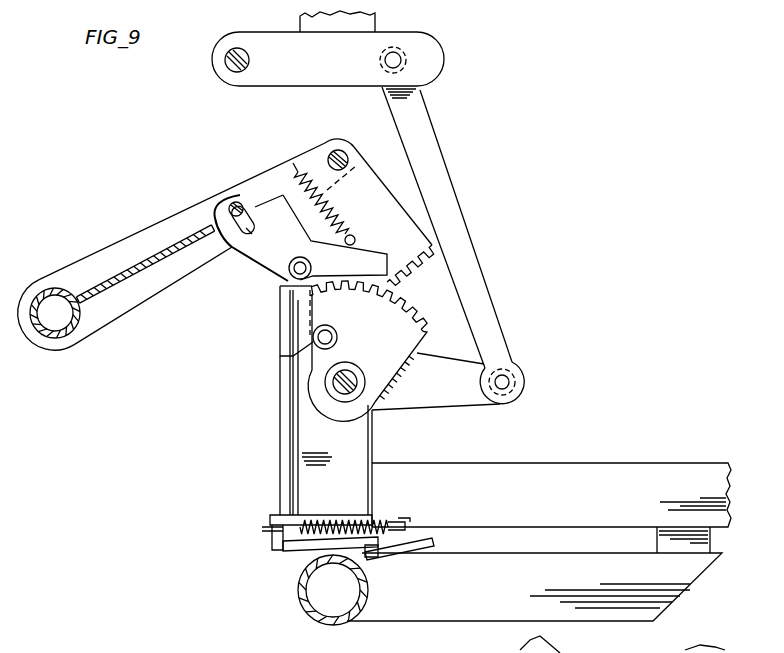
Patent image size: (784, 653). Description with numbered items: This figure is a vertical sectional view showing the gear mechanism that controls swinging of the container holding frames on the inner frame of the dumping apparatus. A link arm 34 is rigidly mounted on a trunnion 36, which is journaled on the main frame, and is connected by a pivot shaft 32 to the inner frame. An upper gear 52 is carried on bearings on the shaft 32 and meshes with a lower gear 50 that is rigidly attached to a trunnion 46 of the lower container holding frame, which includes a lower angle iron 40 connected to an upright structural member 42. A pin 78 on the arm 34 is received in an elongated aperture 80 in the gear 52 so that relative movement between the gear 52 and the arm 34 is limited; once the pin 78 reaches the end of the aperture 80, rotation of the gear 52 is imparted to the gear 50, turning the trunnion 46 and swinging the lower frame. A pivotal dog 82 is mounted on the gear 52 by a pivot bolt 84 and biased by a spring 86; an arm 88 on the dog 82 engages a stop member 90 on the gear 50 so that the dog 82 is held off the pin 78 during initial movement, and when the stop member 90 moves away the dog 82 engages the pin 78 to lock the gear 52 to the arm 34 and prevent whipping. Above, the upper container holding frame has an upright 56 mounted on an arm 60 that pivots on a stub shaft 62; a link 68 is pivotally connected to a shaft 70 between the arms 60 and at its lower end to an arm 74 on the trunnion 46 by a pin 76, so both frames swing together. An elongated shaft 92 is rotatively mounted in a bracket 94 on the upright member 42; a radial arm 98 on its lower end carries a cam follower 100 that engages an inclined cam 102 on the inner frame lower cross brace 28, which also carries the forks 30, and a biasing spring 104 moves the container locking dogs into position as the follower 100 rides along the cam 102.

The lower cross brace 28 is at (322, 618).
The forks 30 is at (438, 612).
The pivot shaft 32 is at (338, 150).
The link arm 34 is at (138, 300).
The trunnion 36 is at (80, 332).
The lower angle iron 40 is at (613, 477).
The upright structural member 42 is at (372, 441).
The trunnion 46 is at (340, 393).
The lower gear 50 is at (400, 327).
The upper gear 52 is at (372, 190).
The upright 56 is at (300, 24).
The arm 60 is at (430, 50).
The stub shaft 62 is at (232, 71).
The link 68 is at (472, 280).
The shaft 70 is at (395, 52).
The arm 74 is at (444, 388).
The pin 76 is at (515, 383).
The pin 78 is at (238, 204).
The elongated aperture 80 is at (249, 233).
The pivotal dog 82 is at (284, 270).
The pivot bolt 84 is at (312, 266).
The spring 86 is at (337, 212).
The arm 88 is at (300, 330).
The stop member 90 is at (337, 335).
The elongated shaft 92 is at (283, 458).
The bracket 94 is at (275, 515).
The radial arm 98 is at (305, 549).
The cam follower 100 is at (372, 557).
The inclined cam 102 is at (425, 551).
The biasing spring 104 is at (348, 500).